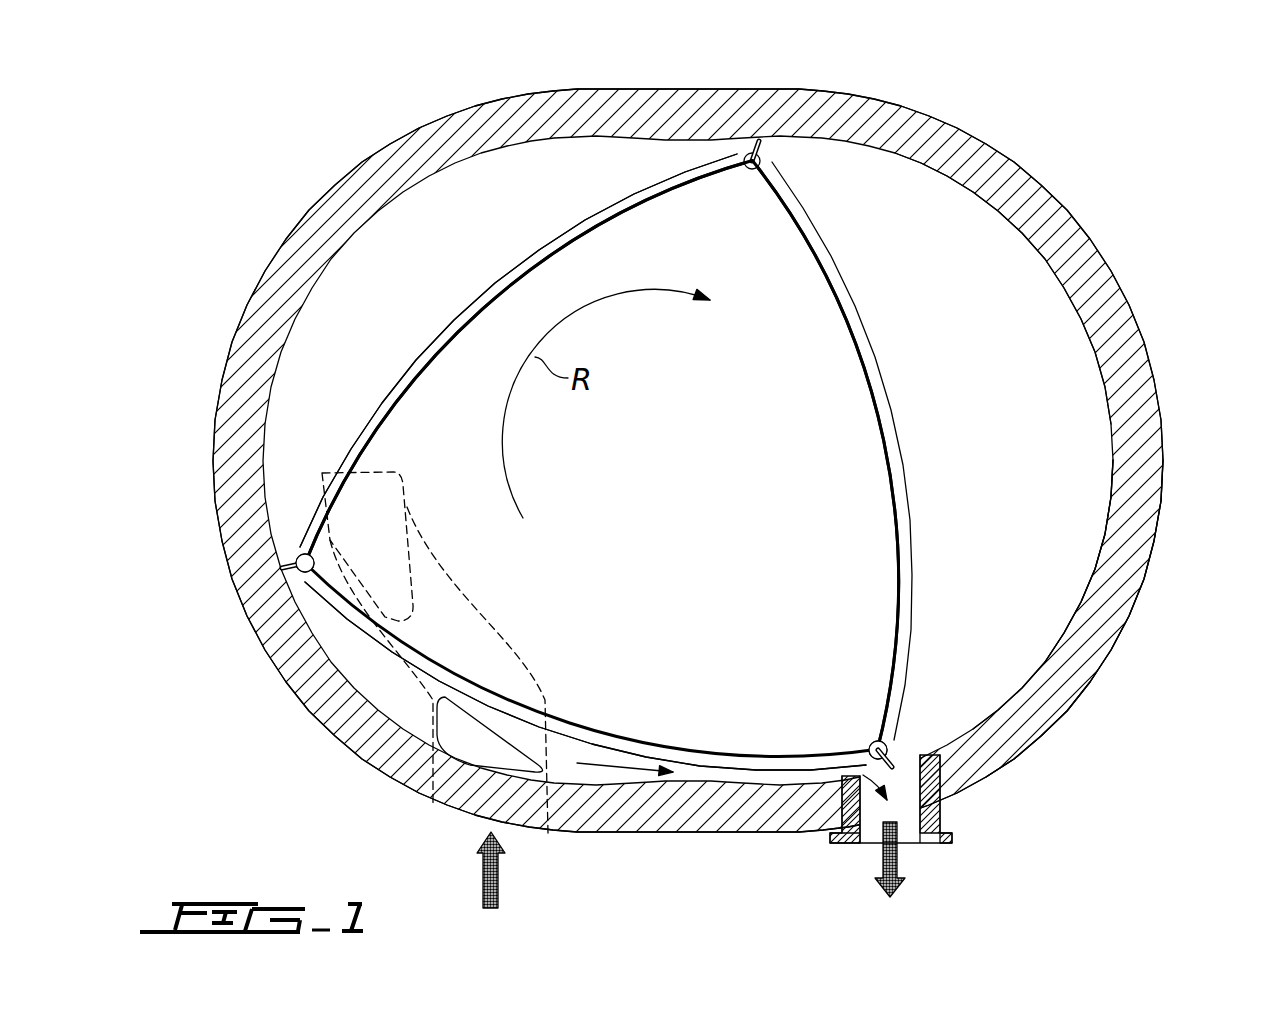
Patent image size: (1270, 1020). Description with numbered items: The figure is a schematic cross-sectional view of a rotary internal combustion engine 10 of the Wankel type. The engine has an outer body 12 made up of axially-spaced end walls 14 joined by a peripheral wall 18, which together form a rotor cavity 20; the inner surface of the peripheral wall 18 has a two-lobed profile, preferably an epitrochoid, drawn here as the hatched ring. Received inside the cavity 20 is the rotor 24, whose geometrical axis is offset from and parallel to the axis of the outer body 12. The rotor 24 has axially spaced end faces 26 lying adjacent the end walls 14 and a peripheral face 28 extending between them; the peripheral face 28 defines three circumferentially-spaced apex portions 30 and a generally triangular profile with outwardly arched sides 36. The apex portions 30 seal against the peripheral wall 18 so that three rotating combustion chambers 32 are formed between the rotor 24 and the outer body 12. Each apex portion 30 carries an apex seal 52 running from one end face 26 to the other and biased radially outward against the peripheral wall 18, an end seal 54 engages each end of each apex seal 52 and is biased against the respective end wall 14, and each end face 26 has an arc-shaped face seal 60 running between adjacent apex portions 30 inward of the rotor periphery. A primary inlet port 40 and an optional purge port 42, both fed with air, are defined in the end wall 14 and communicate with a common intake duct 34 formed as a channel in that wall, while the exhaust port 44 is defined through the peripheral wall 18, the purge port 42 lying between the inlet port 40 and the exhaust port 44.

The rotary internal combustion engine 10 is at (258, 160).
The outer body 12 is at (1073, 210).
The end walls 14 is at (1027, 329).
The peripheral wall 18 is at (1136, 430).
The rotor cavity 20 is at (1024, 550).
The rotor 24 is at (817, 217).
The end faces 26 is at (722, 213).
The peripheral face 28 is at (633, 187).
The apex portions 30 is at (903, 745).
The combustion chambers 32 is at (481, 235).
The intake duct 34 is at (430, 700).
The outwardly arched sides 36 is at (430, 337).
The primary inlet port 40 is at (357, 508).
The purge port 42 is at (483, 740).
The exhaust port 44 is at (907, 830).
The apex seal 52 is at (283, 568).
The end seal 54 is at (300, 550).
The face seal 60 is at (360, 620).